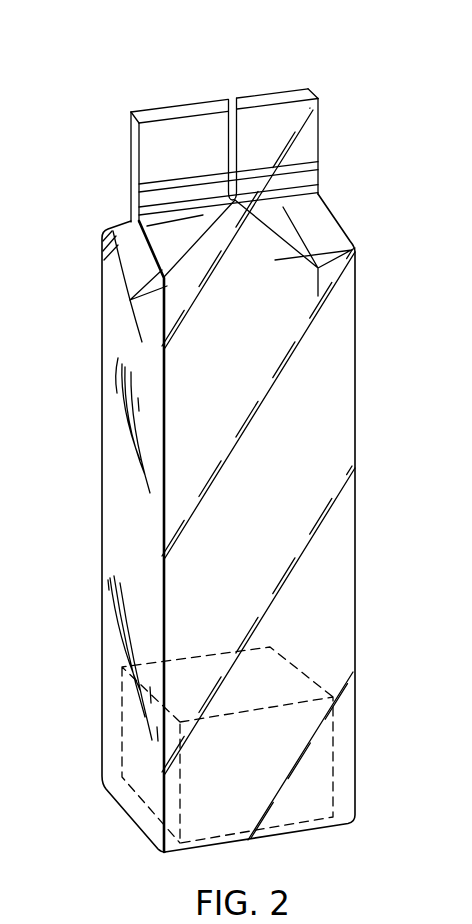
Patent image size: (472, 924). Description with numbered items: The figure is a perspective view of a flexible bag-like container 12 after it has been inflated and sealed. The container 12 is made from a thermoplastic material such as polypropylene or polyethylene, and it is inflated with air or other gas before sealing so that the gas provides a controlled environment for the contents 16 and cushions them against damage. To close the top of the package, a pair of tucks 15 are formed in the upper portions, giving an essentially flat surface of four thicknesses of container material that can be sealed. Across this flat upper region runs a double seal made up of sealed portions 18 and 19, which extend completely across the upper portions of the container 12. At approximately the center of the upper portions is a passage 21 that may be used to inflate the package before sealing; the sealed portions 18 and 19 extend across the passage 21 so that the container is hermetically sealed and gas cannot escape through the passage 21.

The container 12 is at (95, 484).
The tucks 15 is at (150, 283).
The contents 16 is at (333, 765).
The sealed portion 18 is at (303, 162).
The sealed portion 19 is at (307, 188).
The passage 21 is at (233, 99).